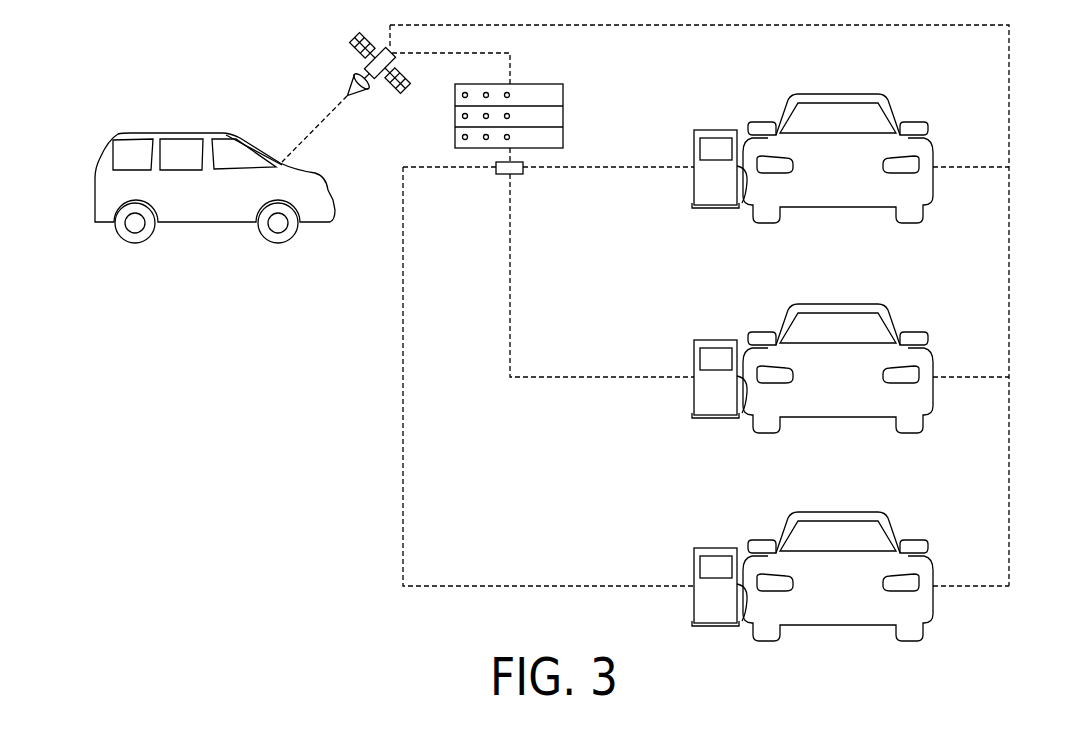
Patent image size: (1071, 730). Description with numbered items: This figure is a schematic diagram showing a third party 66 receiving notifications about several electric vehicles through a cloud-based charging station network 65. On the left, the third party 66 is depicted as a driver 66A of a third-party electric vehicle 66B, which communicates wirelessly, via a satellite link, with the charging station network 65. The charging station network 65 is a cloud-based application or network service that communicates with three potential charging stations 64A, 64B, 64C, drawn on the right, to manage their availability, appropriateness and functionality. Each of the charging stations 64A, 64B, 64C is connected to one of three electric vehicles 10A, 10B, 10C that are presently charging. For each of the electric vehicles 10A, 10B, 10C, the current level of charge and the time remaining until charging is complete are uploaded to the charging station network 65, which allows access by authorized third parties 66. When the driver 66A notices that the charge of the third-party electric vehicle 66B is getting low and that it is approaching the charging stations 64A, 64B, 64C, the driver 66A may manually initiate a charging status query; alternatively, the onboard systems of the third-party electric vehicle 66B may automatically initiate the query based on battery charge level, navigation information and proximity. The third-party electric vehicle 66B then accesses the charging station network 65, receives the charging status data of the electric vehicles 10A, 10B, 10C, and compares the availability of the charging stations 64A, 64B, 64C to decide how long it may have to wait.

The electric vehicle 10A is at (860, 182).
The electric vehicle 10B is at (838, 368).
The electric vehicle 10C is at (838, 576).
The charging station 64A is at (716, 196).
The charging station 64B is at (694, 396).
The charging station 64C is at (694, 604).
The charging station network 65 is at (563, 115).
The third party 66 is at (215, 152).
The driver 66A is at (215, 152).
The third-party electric vehicle 66B is at (165, 183).